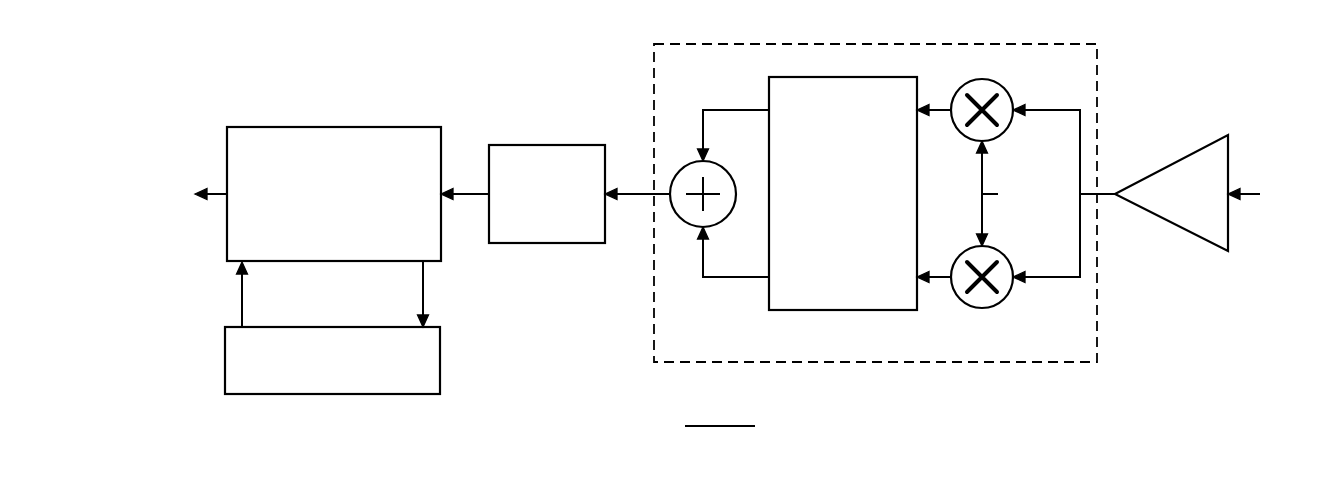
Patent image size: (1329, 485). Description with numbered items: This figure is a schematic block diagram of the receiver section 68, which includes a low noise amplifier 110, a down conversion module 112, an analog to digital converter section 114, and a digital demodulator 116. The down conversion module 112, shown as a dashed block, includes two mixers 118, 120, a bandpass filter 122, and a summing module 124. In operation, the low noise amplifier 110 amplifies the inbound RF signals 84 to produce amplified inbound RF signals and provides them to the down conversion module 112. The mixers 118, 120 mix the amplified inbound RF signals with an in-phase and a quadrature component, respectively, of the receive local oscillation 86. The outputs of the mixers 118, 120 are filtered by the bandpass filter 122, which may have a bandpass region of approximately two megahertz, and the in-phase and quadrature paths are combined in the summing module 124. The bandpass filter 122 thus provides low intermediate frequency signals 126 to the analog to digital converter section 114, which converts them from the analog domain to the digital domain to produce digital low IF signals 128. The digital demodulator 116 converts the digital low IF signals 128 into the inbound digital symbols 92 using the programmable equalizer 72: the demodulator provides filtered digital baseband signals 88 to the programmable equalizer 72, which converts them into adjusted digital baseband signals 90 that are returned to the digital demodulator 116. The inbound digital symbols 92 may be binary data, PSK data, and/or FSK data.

The receiver section 68 is at (818, 454).
The programmable equalizer 72 is at (332, 360).
The inbound RF signals 84 is at (1269, 193).
The receive local oscillation 86 is at (1023, 193).
The filtered digital baseband signals 88 is at (495, 294).
The adjusted digital baseband signals 90 is at (317, 294).
The inbound digital symbols 92 is at (180, 192).
The low noise amplifier 110 is at (1120, 194).
The down conversion module 112 is at (875, 203).
The analog to digital converter section 114 is at (547, 194).
The digital demodulator 116 is at (334, 194).
The mixer 118 is at (972, 99).
The mixer 120 is at (972, 265).
The bandpass filter 122 is at (843, 193).
The summing module 124 is at (719, 193).
The low intermediate frequency signals 126 is at (629, 193).
The digital low IF signals 128 is at (465, 193).